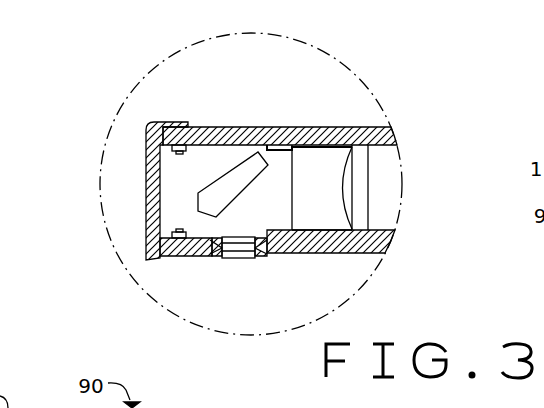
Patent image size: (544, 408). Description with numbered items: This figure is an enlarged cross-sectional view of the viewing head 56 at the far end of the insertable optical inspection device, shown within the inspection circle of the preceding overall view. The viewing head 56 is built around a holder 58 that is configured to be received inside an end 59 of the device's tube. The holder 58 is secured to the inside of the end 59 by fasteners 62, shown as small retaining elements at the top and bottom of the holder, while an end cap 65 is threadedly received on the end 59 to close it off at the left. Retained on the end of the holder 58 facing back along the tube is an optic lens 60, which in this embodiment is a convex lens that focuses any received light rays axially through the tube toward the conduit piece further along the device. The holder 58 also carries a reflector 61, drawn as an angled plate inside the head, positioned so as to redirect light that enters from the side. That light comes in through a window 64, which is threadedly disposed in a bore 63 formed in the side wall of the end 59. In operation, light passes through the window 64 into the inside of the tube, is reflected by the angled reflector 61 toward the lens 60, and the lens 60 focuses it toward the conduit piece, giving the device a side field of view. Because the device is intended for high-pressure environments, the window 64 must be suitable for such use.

The viewing head 56 is at (117, 77).
The holder 58 is at (272, 143).
The end 59 is at (322, 127).
The optic lens 60 is at (355, 193).
The reflector 61 is at (228, 188).
The fasteners 62 is at (192, 127).
The bore 63 is at (210, 250).
The window 64 is at (252, 258).
The end cap 65 is at (160, 253).